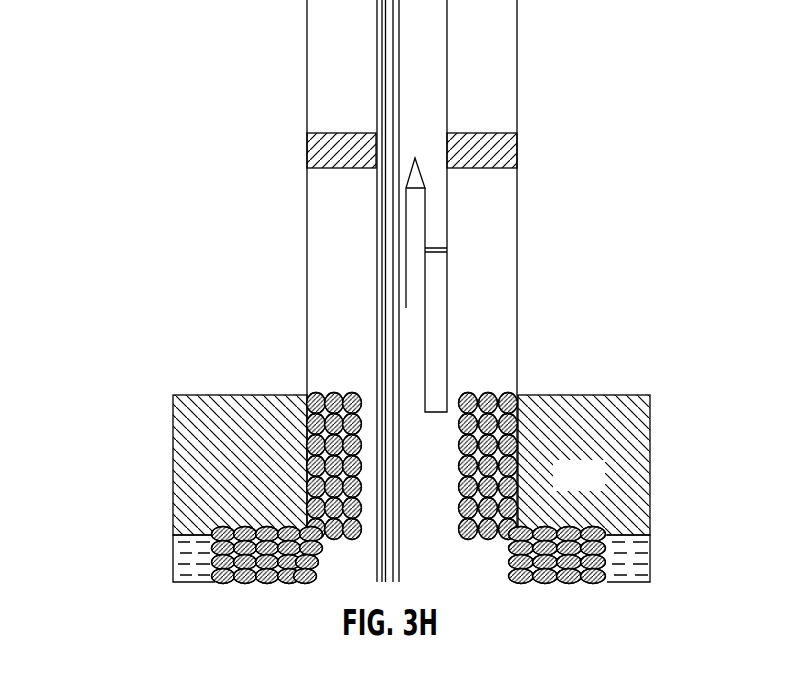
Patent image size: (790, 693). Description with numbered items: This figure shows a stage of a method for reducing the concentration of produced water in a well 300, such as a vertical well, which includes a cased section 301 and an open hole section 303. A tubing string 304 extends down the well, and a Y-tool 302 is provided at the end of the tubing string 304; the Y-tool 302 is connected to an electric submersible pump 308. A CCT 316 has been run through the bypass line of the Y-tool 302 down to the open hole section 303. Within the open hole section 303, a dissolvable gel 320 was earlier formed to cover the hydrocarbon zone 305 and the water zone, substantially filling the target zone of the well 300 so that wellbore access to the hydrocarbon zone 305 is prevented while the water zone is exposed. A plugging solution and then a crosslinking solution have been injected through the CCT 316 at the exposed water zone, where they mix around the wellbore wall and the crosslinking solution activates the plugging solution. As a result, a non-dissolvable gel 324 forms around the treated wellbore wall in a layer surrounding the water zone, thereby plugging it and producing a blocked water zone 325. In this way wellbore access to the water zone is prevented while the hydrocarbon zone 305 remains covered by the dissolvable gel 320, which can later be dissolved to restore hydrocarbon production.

The well 300 is at (517, 50).
The cased section 301 is at (127, 420).
The Y-tool 302 is at (420, 172).
The open hole section 303 is at (127, 420).
The tubing string 304 is at (447, 70).
The hydrocarbon zone 305 is at (600, 487).
The electric submersible pump 308 is at (432, 333).
The CCT 316 is at (392, 323).
The dissolvable gel 320 is at (333, 393).
The non-dissolvable gel 324 is at (246, 584).
The blocked water zone 325 is at (662, 535).